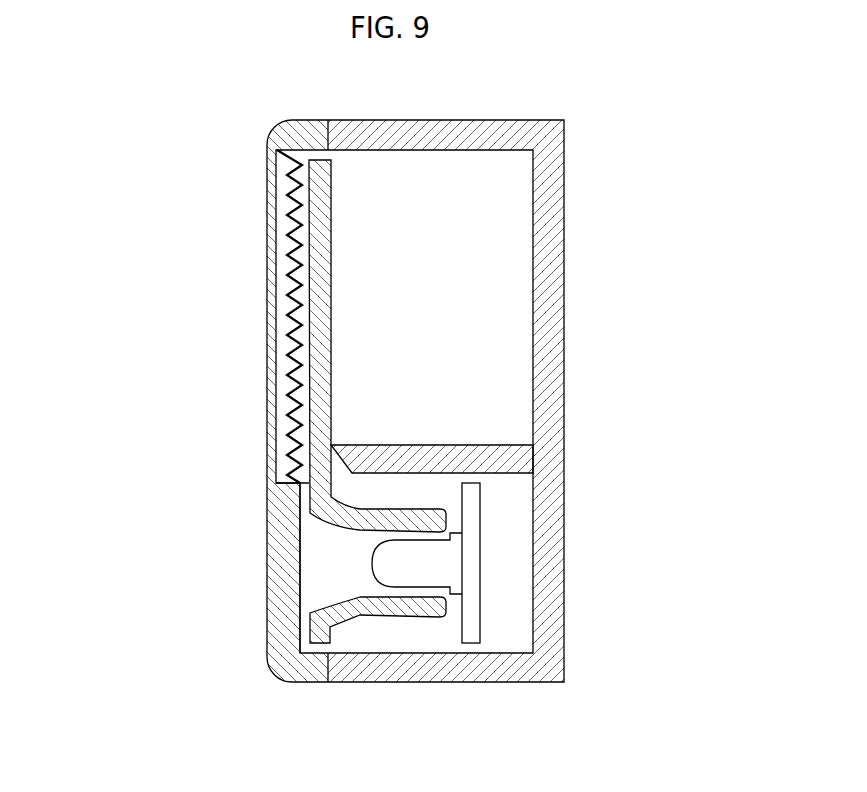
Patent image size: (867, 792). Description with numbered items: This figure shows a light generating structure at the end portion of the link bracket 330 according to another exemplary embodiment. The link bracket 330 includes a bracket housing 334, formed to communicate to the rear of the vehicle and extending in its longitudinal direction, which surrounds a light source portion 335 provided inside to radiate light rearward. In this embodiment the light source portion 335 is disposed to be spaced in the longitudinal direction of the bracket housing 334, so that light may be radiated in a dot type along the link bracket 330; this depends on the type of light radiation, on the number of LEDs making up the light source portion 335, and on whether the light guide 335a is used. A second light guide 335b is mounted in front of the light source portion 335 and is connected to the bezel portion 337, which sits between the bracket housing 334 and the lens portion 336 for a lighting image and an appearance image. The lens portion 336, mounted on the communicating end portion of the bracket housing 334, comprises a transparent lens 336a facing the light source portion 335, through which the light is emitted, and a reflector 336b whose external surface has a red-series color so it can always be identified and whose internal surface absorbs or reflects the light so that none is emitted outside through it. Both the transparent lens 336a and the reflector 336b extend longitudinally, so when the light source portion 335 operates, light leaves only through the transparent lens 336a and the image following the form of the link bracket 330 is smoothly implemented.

The link bracket 330 is at (576, 146).
The bracket housing 334 is at (564, 275).
The light source portion 335 is at (438, 560).
The light guide 335a is at (430, 443).
The second light guide 335b is at (372, 608).
The lens portion 336 is at (103, 407).
The transparent lens 336a is at (268, 548).
The reflector 336b is at (268, 400).
The bezel portion 337 is at (322, 226).